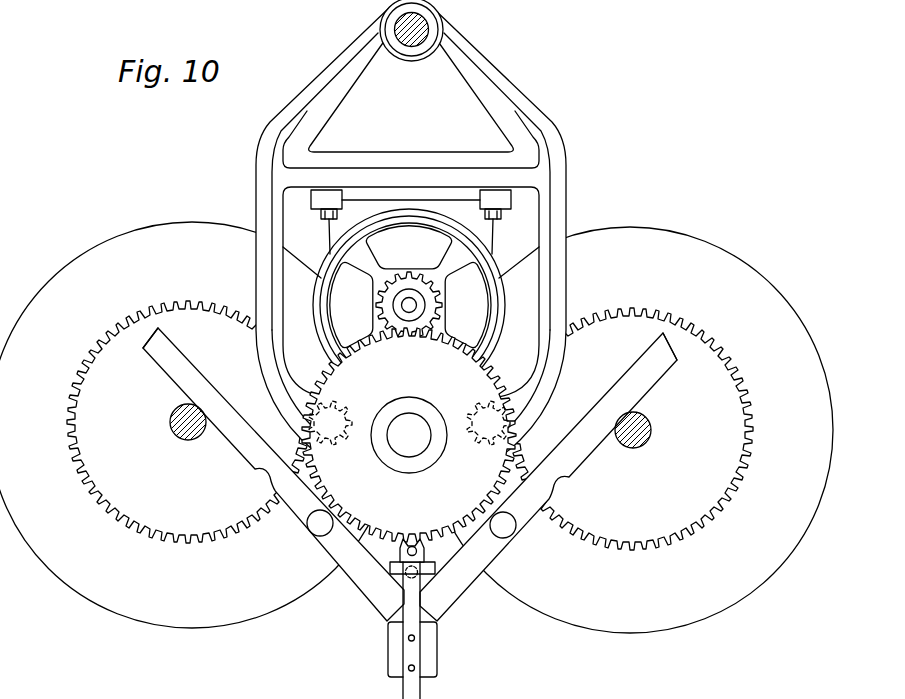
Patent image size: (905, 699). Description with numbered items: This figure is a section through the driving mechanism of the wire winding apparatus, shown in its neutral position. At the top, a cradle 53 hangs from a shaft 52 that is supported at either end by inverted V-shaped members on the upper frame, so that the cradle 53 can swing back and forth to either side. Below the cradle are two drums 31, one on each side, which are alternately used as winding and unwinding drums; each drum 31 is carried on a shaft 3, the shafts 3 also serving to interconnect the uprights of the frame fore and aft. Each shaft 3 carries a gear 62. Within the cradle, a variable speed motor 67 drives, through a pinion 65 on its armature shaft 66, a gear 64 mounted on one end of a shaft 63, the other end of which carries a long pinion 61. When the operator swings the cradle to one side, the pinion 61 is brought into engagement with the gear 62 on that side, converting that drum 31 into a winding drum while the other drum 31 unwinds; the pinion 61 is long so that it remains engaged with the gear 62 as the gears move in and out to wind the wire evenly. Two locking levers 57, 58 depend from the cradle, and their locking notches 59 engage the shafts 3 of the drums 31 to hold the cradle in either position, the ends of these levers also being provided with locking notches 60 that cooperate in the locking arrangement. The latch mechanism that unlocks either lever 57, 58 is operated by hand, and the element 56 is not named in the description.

The shaft 3 is at (182, 441).
The drum 31 is at (216, 612).
The shaft 52 is at (436, 25).
The cradle 53 is at (519, 100).
The pivot 56 is at (405, 576).
The locking lever 57 is at (444, 592).
The locking lever 58 is at (386, 604).
The locking notch 59 is at (263, 478).
The locking notch 60 is at (147, 334).
The pinion 61 is at (339, 398).
The gear 62 is at (141, 536).
The shaft 63 is at (402, 444).
The gear 64 is at (409, 435).
The pinion 65 is at (378, 294).
The armature shaft 66 is at (396, 307).
The variable speed motor 67 is at (409, 305).